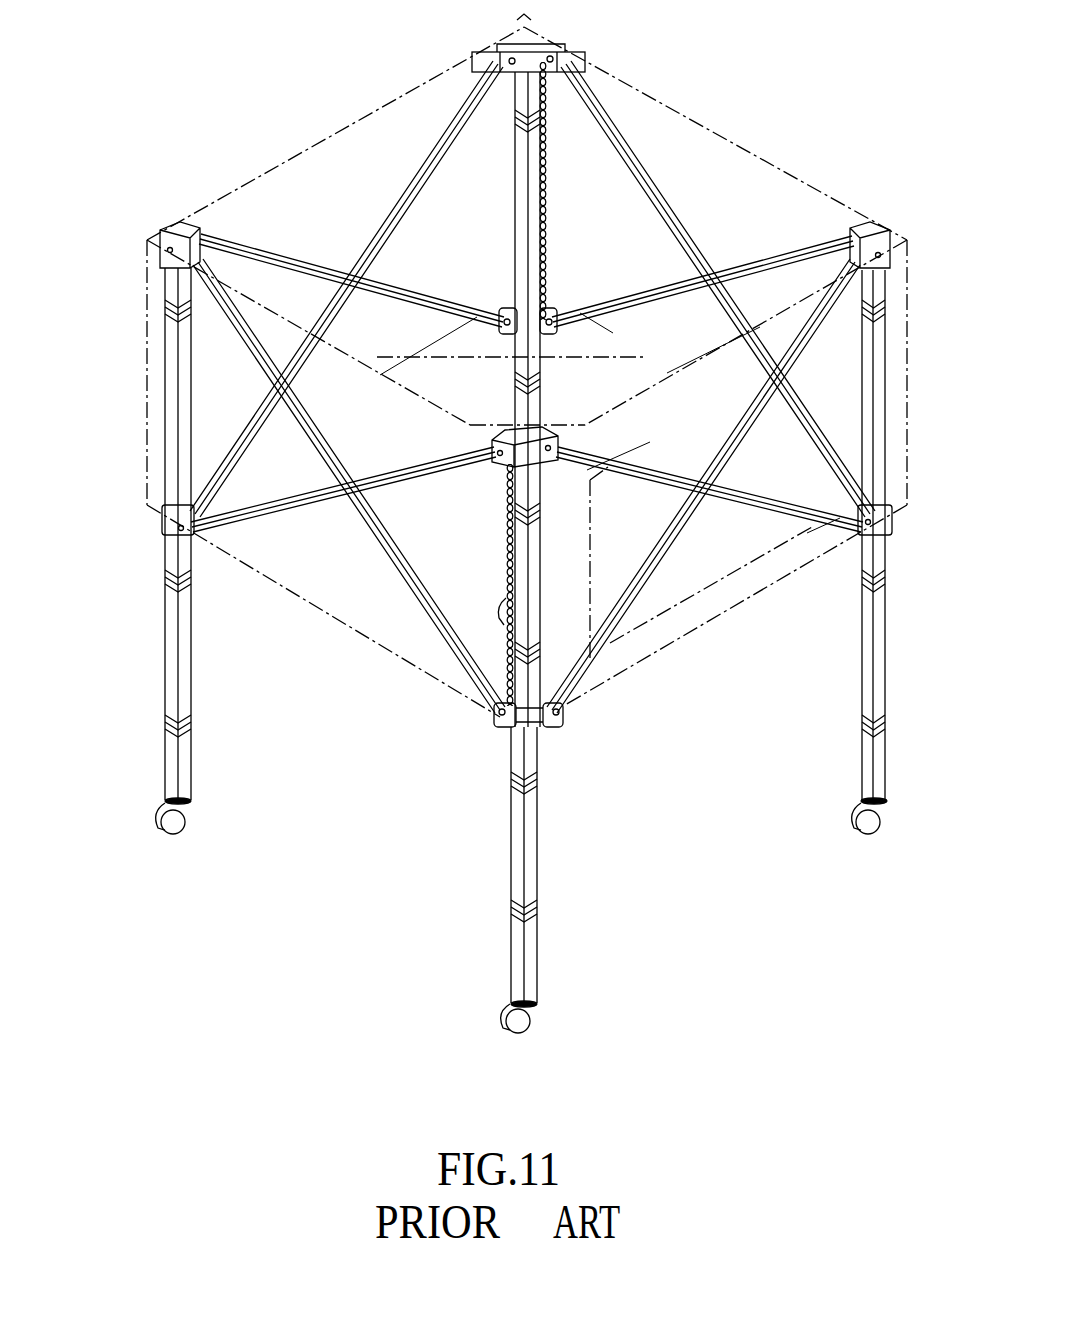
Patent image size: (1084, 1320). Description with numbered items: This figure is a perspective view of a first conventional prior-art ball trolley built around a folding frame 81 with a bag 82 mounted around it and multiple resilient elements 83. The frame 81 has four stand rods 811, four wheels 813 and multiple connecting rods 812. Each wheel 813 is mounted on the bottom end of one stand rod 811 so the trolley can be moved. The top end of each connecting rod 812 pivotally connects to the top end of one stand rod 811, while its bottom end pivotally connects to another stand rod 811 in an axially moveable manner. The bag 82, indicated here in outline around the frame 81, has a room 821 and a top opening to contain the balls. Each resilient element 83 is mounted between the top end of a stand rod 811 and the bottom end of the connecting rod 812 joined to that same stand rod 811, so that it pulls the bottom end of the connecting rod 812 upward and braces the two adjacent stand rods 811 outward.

The folding frame 81 is at (166, 543).
The stand rod 811 is at (170, 660).
The connecting rod 812 is at (443, 620).
The wheel 813 is at (180, 826).
The bag 82 is at (253, 166).
The room 821 is at (374, 148).
The resilient element 83 is at (545, 177).